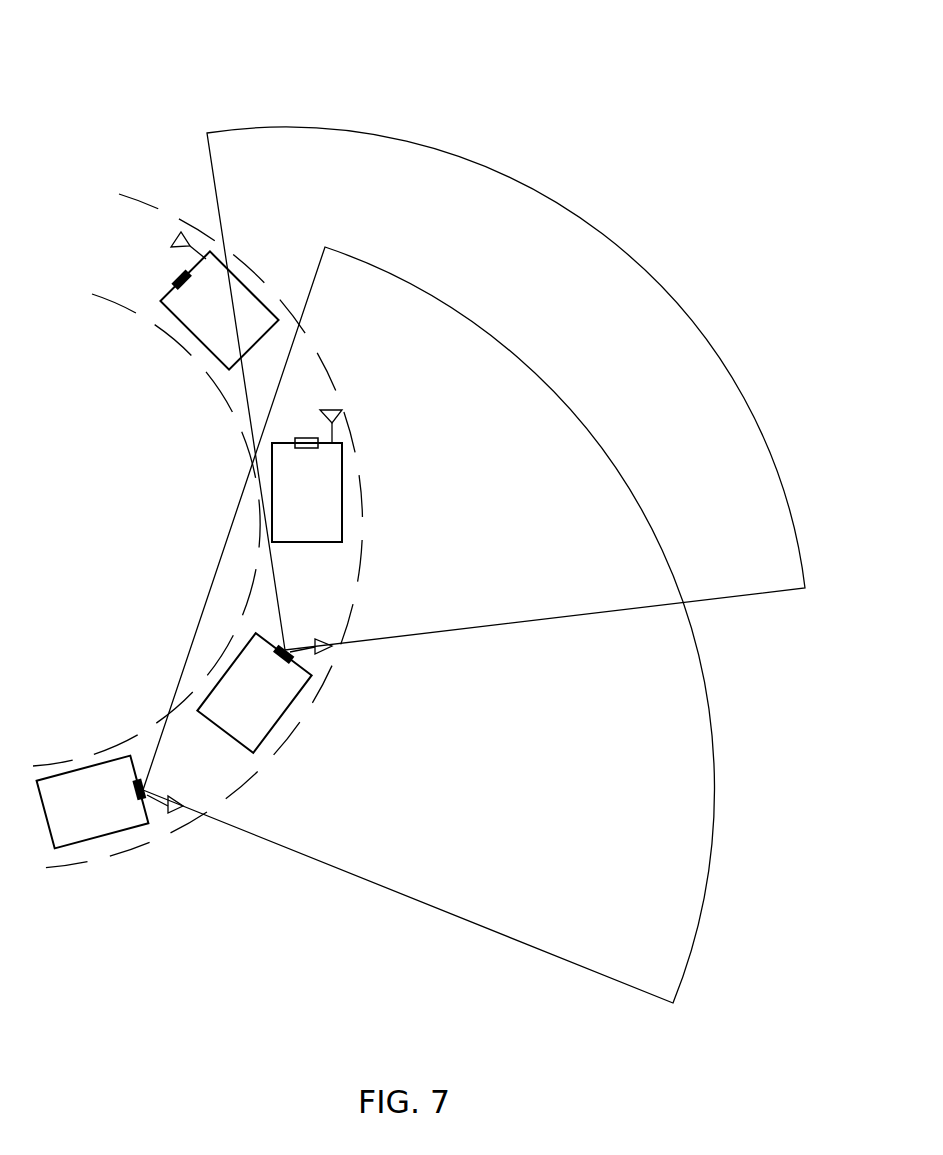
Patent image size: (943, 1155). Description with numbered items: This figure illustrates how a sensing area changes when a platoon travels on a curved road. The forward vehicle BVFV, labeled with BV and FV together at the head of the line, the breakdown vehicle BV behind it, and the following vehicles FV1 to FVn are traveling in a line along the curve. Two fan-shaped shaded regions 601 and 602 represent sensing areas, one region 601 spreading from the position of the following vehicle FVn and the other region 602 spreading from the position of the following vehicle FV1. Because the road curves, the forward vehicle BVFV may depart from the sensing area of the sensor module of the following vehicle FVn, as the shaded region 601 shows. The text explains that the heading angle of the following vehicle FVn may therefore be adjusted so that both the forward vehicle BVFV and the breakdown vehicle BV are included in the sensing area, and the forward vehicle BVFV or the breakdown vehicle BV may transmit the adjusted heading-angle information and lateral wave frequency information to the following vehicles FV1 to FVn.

The first sensing/communication range (of FVn) 601 is at (597, 973).
The second sensing/communication range (of FV1) 602 is at (762, 593).
The breakdown vehicle BV is at (307, 476).
The forward vehicle FV is at (217, 301).
The following vehicle FV1 is at (264, 691).
The following vehicle FVn is at (110, 801).